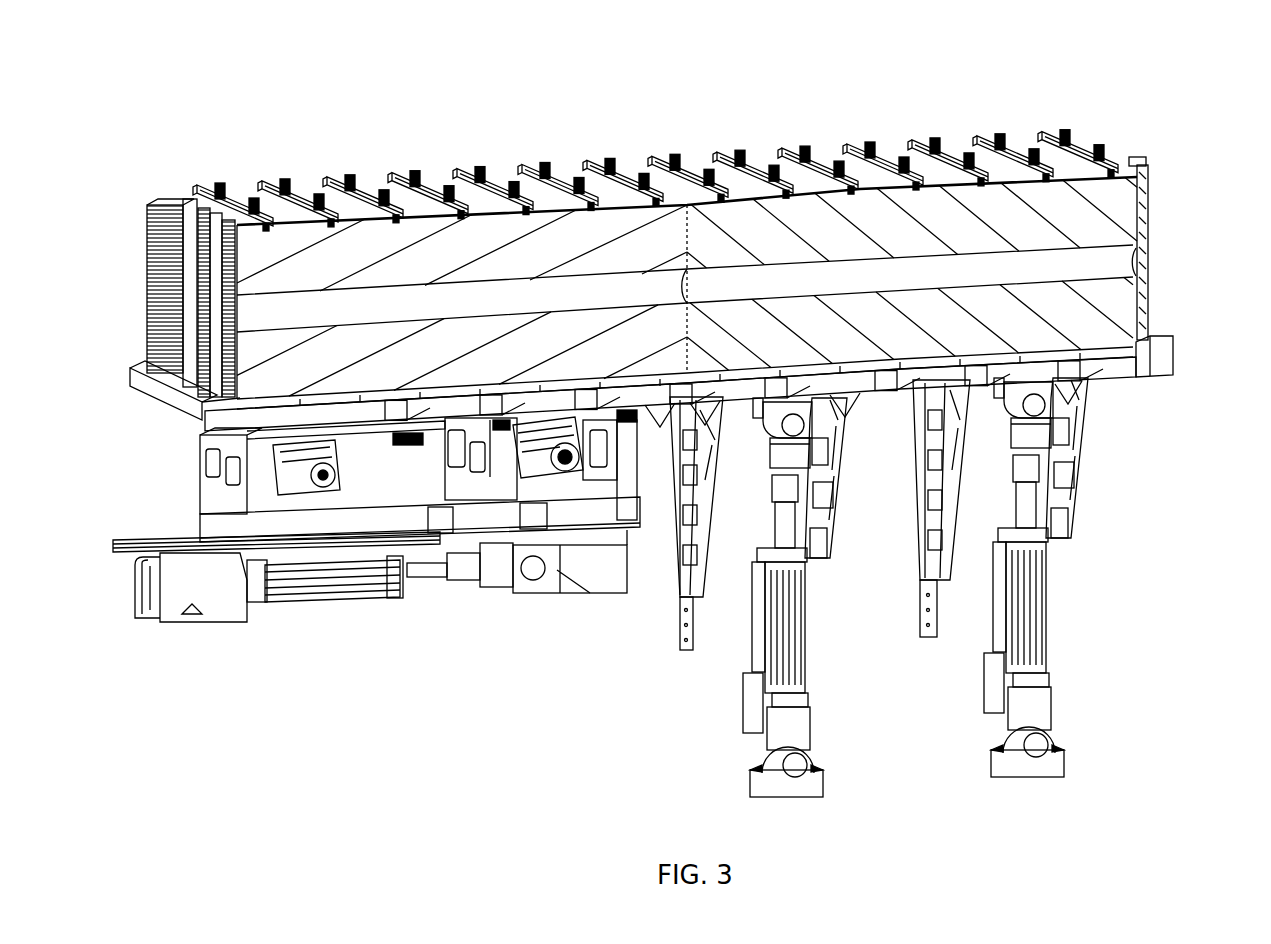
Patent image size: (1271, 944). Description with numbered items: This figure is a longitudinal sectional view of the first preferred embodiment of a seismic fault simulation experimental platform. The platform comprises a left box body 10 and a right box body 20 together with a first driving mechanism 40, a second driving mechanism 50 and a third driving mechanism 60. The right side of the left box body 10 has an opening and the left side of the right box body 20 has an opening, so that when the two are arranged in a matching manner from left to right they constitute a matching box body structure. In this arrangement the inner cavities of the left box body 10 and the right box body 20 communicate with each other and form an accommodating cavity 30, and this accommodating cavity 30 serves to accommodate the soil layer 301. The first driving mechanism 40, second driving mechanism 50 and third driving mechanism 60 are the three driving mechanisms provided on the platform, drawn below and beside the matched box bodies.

The left box body 10 is at (473, 141).
The right box body 20 is at (813, 121).
The accommodating cavity 30 is at (1166, 334).
The soil layer 301 is at (1147, 229).
The first driving mechanism 40 is at (358, 526).
The second driving mechanism 50 is at (323, 609).
The third driving mechanism 60 is at (1069, 660).